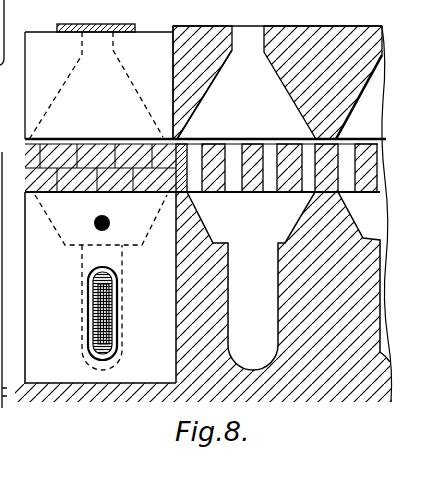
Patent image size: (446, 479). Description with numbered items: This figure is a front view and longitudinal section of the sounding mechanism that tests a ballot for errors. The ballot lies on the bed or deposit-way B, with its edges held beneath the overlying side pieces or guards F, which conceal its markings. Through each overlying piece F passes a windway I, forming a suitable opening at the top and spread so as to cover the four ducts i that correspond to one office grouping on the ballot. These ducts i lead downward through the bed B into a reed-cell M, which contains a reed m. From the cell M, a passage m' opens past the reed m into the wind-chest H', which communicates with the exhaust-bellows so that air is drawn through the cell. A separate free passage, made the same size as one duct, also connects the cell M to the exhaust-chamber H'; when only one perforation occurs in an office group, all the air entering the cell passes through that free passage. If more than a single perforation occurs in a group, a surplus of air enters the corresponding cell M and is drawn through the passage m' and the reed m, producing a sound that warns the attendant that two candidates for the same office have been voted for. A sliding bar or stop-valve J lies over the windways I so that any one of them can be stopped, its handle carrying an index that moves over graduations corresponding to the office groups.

The sliding bar or stop-valve J is at (96, 16).
The windway I is at (206, 82).
The overlying side piece or guard F is at (99, 82).
The bed or deposit-way B is at (410, 126).
The duct i is at (276, 168).
The pin / pivot I' is at (111, 225).
The wind-chest H' is at (100, 287).
The passage m' is at (89, 307).
The reed m is at (120, 313).
The reed-cell M is at (203, 297).